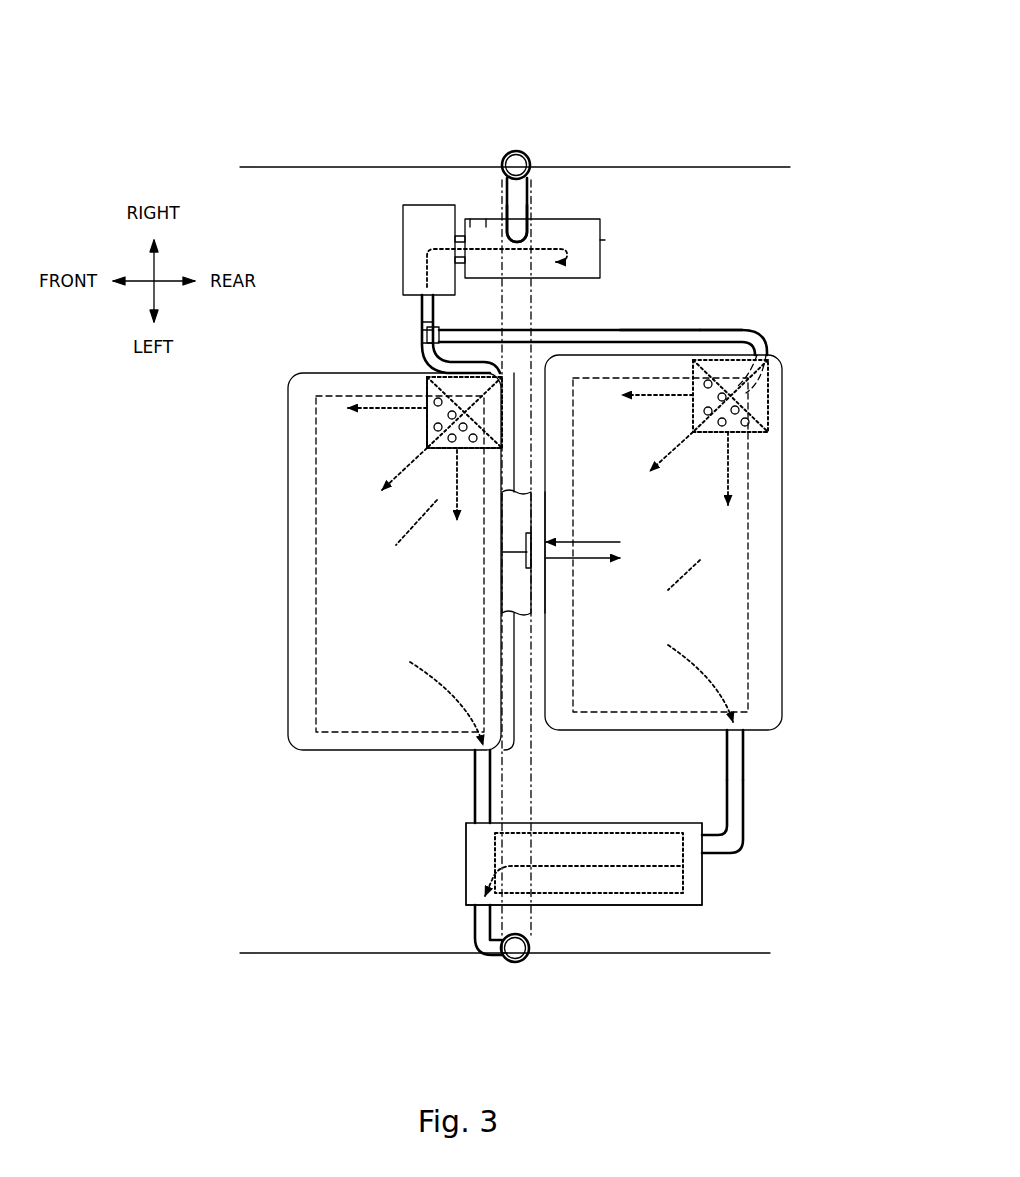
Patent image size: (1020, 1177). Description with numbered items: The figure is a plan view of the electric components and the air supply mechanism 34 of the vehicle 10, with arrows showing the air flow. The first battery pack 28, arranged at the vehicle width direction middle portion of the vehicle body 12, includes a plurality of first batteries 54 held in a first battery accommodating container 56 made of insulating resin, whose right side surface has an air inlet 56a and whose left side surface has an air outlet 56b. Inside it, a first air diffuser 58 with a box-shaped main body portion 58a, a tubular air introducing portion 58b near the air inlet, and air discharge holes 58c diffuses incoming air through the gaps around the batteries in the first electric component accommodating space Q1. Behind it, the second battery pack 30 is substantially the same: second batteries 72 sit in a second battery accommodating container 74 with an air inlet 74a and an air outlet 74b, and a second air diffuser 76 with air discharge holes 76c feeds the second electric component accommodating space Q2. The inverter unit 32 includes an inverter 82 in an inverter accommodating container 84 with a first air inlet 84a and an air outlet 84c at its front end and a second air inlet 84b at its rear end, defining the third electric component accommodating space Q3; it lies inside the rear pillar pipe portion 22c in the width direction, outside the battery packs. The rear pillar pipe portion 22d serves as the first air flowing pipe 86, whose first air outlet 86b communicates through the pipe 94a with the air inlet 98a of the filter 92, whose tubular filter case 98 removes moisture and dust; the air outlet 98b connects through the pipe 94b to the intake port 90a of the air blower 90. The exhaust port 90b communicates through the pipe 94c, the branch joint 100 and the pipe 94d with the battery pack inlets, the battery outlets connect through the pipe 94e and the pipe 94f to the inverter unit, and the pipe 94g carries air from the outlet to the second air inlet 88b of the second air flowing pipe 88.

The vehicle body frame 10 is at (289, 156).
The vehicle body 12 is at (314, 962).
The rear pillar pipe portion 22c is at (530, 961).
The rear pillar pipe portion 22d is at (523, 187).
The first battery pack 28 is at (286, 545).
The second battery pack 30 is at (787, 500).
The inverter unit 32 is at (580, 910).
The air supply mechanism 34 is at (694, 291).
The first battery 54 is at (336, 585).
The first battery accommodating container 56 is at (302, 566).
The air inlet 56a is at (472, 372).
The air outlet 56b is at (476, 762).
The first air diffuser 58 is at (420, 428).
The main body portion 58a is at (427, 415).
The air introducing portion 58b is at (428, 378).
The air discharge holes 58c is at (429, 389).
The second battery 72 is at (725, 572).
The second battery accommodating container 74 is at (775, 540).
The air inlet 74a is at (760, 355).
The air outlet 74b is at (737, 740).
The second air diffuser 76 is at (763, 409).
The air discharge holes 76c is at (752, 430).
The inverter 82 is at (605, 882).
The inverter accommodating container 84 is at (668, 902).
The first air inlet 84a is at (466, 826).
The second air inlet 84b is at (717, 832).
The air outlet 84c is at (473, 928).
The first air flowing pipe 86 is at (514, 148).
The first air outlet 86b is at (526, 205).
The second air flowing pipe 88 is at (512, 966).
The second air inlet 88b is at (486, 958).
The air blower 90 is at (403, 245).
The intake port 90a is at (455, 240).
The exhaust port 90b is at (423, 323).
The filter 92 is at (588, 218).
The pipe 94a is at (579, 216).
The pipe 94b is at (458, 273).
The pipe 94c is at (552, 331).
The pipe 94d is at (712, 333).
The pipe 94e is at (482, 795).
The pipe 94f is at (740, 808).
The pipe 94g is at (476, 942).
The filter case 98 is at (572, 262).
The air inlet 98a is at (490, 218).
The air outlet 98b is at (477, 218).
The branch joint 100 is at (424, 340).
The first electric component accommodating space Q1 is at (344, 630).
The second electric component accommodating space Q2 is at (728, 607).
The third electric component accommodating space Q3 is at (656, 867).